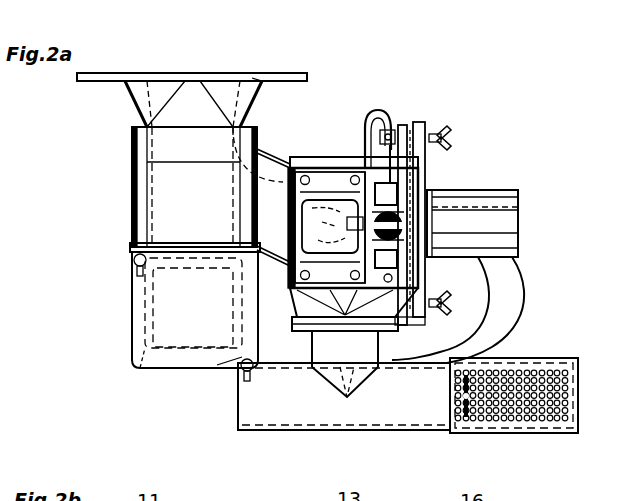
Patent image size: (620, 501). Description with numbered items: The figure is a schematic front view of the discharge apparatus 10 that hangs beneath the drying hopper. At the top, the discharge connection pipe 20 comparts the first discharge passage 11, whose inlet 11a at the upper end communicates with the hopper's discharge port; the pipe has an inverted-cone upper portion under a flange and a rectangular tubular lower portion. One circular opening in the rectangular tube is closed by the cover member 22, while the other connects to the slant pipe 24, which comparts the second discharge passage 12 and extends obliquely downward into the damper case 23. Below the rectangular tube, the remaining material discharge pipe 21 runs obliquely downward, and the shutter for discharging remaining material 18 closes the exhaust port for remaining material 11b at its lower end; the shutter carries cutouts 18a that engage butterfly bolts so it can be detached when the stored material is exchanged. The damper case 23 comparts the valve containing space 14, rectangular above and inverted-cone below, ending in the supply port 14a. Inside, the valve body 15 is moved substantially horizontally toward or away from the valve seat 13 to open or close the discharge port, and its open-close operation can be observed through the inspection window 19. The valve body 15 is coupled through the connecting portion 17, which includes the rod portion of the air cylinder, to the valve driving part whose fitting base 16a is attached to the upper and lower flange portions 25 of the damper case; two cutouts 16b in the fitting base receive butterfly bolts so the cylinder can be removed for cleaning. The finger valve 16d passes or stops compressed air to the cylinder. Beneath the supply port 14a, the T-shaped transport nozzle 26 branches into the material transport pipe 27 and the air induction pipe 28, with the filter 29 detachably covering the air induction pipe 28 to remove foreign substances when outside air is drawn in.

The discharge apparatus 10 is at (500, 165).
The first discharge passage 11 is at (222, 125).
The inlet 11a is at (252, 78).
The exhaust port for remaining material 11b is at (137, 372).
The second discharge passage 12 is at (257, 183).
The valve seat 13 is at (297, 300).
The valve containing space 14 is at (330, 335).
The supply port 14a is at (362, 335).
The valve body 15 is at (300, 185).
The fitting base 16a is at (428, 160).
The cutouts 16b is at (447, 134).
The finger valve 16d is at (520, 207).
The connecting portion 17 is at (335, 212).
The shutter for discharging remaining material 18 is at (188, 337).
The cutouts 18a is at (135, 258).
The inspection window 19 is at (347, 170).
The discharge connection pipe 20 is at (127, 95).
The remaining material discharge pipe 21 is at (152, 302).
The cover member 22 is at (132, 180).
The damper case 23 is at (330, 157).
The slant pipe 24 is at (270, 150).
The flange portions 25 is at (403, 125).
The transport nozzle 26 is at (365, 437).
The material transport pipe 27 is at (267, 432).
The air induction pipe 28 is at (430, 432).
The filter 29 is at (543, 358).